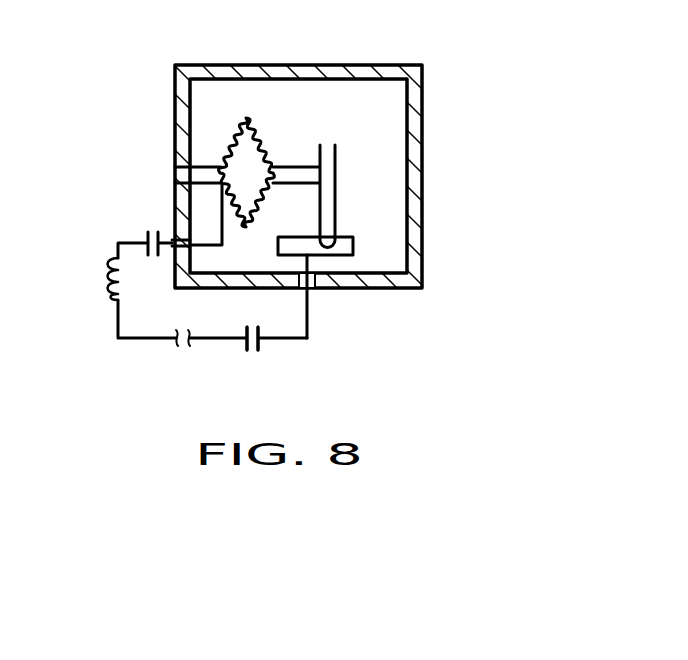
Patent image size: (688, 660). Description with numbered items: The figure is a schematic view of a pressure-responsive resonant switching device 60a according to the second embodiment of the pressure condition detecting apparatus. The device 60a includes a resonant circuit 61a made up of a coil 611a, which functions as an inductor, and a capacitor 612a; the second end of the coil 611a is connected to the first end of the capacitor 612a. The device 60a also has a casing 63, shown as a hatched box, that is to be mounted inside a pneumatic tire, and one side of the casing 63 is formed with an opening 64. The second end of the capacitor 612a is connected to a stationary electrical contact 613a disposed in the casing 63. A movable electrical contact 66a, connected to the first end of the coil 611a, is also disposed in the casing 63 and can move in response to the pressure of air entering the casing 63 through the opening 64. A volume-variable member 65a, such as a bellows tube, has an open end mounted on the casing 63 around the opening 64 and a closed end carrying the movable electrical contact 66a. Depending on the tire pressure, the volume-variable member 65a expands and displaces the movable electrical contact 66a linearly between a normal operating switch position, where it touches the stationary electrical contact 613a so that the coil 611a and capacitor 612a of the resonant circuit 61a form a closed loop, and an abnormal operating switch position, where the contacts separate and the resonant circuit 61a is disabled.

The pressure-responsive resonant switching device 60a is at (310, 145).
The casing 63 is at (370, 64).
The opening 64 is at (177, 173).
The volume-variable member 65a is at (252, 130).
The movable electrical contact 66a is at (336, 167).
The stationary electrical contact 613a is at (354, 244).
The resonant circuit 61a is at (204, 296).
The coil 611a is at (104, 278).
The capacitor 612a is at (257, 352).